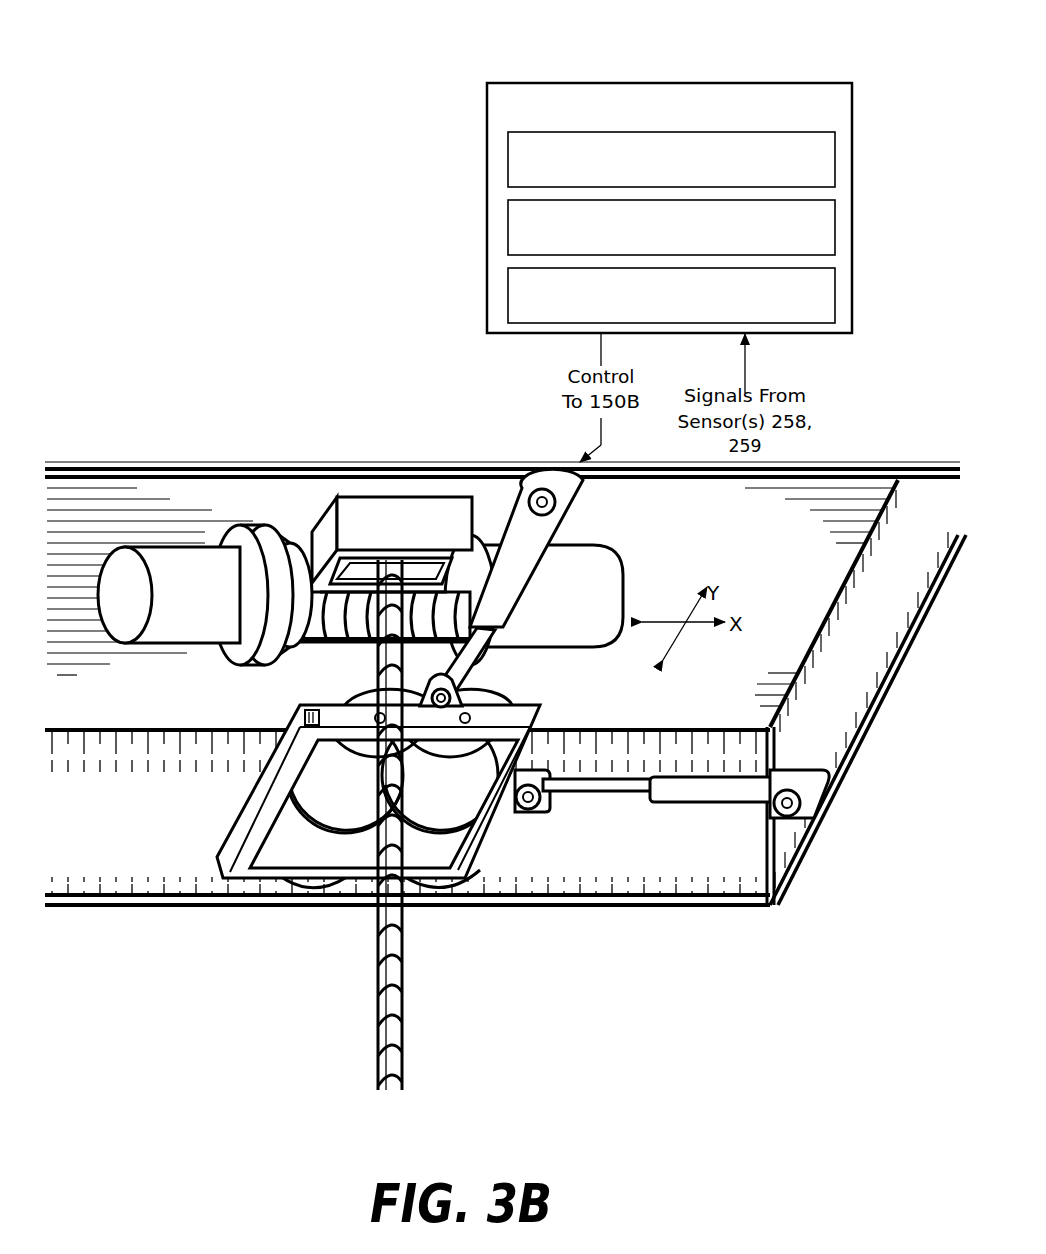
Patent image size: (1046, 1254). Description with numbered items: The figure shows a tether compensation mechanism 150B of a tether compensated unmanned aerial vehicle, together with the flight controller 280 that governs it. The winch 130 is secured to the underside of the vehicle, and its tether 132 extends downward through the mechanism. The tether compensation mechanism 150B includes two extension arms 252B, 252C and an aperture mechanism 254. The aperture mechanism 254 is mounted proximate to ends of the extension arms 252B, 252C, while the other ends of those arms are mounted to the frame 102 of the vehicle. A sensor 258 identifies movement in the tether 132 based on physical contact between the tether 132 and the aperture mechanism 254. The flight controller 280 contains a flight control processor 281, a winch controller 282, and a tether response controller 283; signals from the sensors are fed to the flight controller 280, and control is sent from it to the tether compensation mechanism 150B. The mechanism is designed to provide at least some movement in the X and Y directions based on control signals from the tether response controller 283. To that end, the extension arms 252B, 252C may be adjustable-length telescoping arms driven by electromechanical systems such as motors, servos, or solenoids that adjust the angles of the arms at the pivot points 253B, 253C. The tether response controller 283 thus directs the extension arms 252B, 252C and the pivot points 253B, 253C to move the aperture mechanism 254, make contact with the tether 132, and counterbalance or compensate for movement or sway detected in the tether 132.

The flight controller 280 is at (767, 110).
The flight control processor 281 is at (689, 180).
The winch controller 282 is at (689, 248).
The tether response controller 283 is at (689, 316).
The winch 130 is at (604, 569).
The tether 132 is at (378, 658).
The frame 102 is at (123, 888).
The tether compensation mechanism 150B is at (518, 928).
The extension arm 252B is at (640, 789).
The extension arm 252C is at (519, 555).
The pivot point 253B is at (800, 815).
The pivot point 253C is at (560, 492).
The aperture mechanism 254 is at (475, 903).
The sensor 258 is at (304, 718).